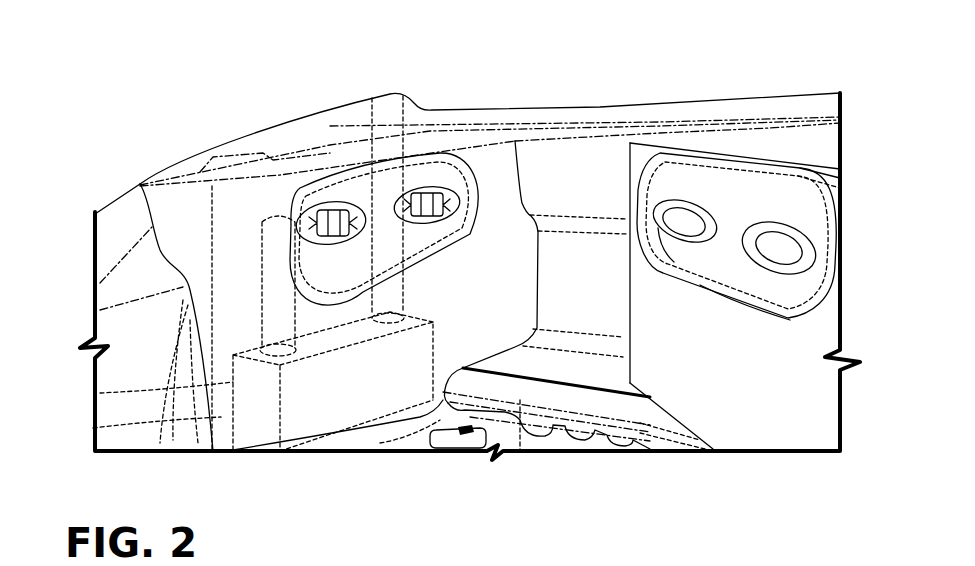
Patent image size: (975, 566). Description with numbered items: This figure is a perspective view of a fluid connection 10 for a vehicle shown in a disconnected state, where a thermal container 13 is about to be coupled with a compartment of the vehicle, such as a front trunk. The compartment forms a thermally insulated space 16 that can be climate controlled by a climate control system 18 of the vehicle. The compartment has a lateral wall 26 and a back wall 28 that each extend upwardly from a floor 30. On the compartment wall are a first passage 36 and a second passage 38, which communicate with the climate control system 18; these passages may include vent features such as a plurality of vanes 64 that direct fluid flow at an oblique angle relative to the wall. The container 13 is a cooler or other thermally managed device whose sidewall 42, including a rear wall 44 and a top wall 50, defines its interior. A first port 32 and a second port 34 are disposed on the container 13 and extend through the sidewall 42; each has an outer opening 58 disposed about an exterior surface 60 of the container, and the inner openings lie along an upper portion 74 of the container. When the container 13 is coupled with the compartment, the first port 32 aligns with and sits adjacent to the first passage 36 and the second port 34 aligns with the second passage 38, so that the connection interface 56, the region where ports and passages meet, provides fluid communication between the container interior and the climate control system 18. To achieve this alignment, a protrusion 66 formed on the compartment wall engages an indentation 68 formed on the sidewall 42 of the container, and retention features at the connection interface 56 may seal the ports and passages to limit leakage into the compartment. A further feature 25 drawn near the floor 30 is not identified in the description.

The fluid connection 10 is at (636, 80).
The thermal container 13 is at (773, 112).
The thermally insulated space 16 is at (579, 290).
The climate control system 18 is at (93, 428).
The floor pan 25 is at (100, 393).
The lateral wall 26 is at (230, 206).
The back wall 28 is at (548, 149).
The floor 30 is at (578, 399).
The first port 32 is at (812, 228).
The second port 34 is at (680, 247).
The first passage 36 is at (322, 191).
The second passage 38 is at (435, 177).
The sidewall 42 is at (703, 133).
The rear wall 44 is at (812, 380).
The top wall 50 is at (812, 148).
The connection interface 56 is at (643, 251).
The outer opening 58 is at (687, 212).
The exterior surface 60 is at (717, 350).
The vanes 64 is at (347, 213).
The protrusion 66 is at (802, 282).
The indentation 68 is at (312, 260).
The upper portion 74 is at (630, 165).